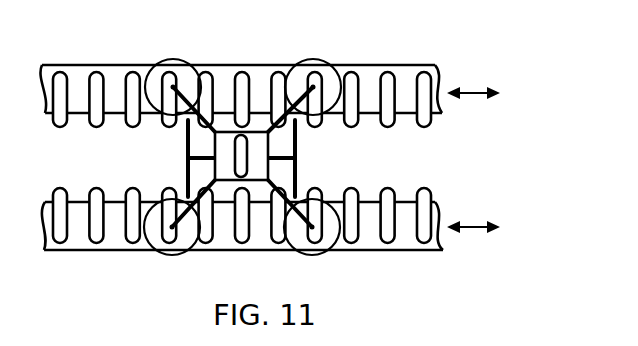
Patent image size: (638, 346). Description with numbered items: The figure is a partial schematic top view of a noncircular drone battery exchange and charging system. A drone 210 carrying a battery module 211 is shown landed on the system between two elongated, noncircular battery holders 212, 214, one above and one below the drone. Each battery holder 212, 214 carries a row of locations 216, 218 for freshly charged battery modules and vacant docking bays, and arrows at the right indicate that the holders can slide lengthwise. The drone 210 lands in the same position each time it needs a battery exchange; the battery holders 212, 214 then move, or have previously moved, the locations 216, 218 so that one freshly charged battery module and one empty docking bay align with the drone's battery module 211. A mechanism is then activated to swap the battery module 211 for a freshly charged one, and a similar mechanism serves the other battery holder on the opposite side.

The drone 210 is at (178, 62).
The battery module 211 is at (237, 170).
The battery holder 212 is at (407, 65).
The battery holder 214 is at (430, 252).
The location of freshly charged battery modules and vacant docking bays 216 is at (430, 122).
The location of freshly charged battery modules and vacant docking bays 218 is at (430, 192).